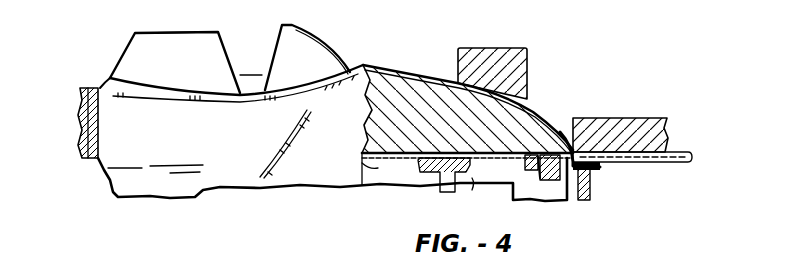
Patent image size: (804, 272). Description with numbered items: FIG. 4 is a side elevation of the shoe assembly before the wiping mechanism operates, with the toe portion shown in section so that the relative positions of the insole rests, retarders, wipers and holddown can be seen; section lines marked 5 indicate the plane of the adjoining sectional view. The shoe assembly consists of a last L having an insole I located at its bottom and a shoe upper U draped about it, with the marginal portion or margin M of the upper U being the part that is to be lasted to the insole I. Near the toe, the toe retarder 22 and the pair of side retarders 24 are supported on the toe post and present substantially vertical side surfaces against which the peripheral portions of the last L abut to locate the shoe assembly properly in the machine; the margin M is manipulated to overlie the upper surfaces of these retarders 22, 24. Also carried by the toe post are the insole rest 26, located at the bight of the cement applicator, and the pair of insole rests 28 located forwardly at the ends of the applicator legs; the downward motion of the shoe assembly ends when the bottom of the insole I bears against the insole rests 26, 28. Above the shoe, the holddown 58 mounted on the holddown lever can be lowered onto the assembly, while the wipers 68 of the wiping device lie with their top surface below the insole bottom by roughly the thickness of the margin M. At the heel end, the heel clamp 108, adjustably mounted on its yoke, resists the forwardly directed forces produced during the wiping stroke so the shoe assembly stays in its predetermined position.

The heel clamp 108 is at (88, 90).
The holddown 58 is at (528, 53).
The shoe upper U is at (443, 83).
The last L is at (537, 120).
The insole I is at (362, 166).
The insole rest 26 is at (525, 160).
The insole rests 28 is at (455, 190).
The side retarders 24 is at (477, 185).
The toe retarder 22 is at (583, 200).
The margin of the upper M is at (597, 168).
The wipers 68 is at (637, 158).
The section line 5 is at (346, 233).